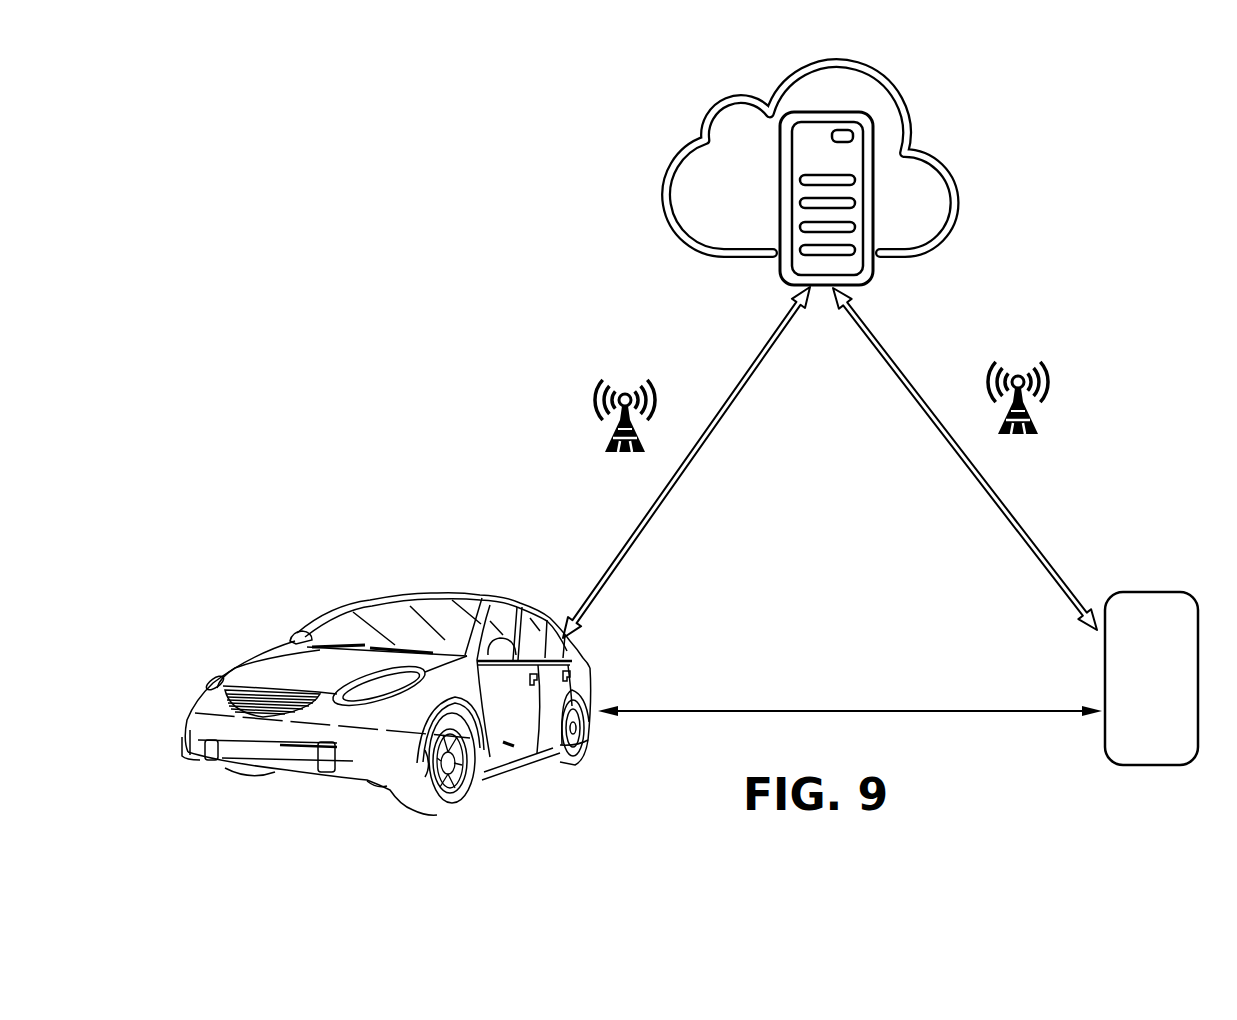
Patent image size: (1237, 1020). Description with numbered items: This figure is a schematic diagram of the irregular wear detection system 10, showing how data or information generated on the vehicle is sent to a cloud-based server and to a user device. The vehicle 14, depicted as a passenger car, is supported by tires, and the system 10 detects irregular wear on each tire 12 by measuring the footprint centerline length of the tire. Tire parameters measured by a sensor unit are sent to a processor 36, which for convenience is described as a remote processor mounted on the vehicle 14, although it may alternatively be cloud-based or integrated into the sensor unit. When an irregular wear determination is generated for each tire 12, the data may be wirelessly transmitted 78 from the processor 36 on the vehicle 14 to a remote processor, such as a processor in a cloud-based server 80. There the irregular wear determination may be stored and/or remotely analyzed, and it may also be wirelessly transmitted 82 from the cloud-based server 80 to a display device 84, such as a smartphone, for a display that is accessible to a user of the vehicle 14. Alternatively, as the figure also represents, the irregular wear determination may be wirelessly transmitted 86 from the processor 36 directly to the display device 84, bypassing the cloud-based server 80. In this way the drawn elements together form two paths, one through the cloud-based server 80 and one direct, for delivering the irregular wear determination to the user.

The irregular wear detection system 10 is at (1150, 166).
The tire 12 is at (473, 792).
The vehicle 14 is at (437, 730).
The processor 36 is at (535, 763).
The wireless transmission 78 is at (640, 525).
The cloud-based server 80 is at (740, 258).
The wireless transmission 82 is at (1012, 500).
The display device 84 is at (1151, 678).
The wireless transmission 86 is at (823, 711).